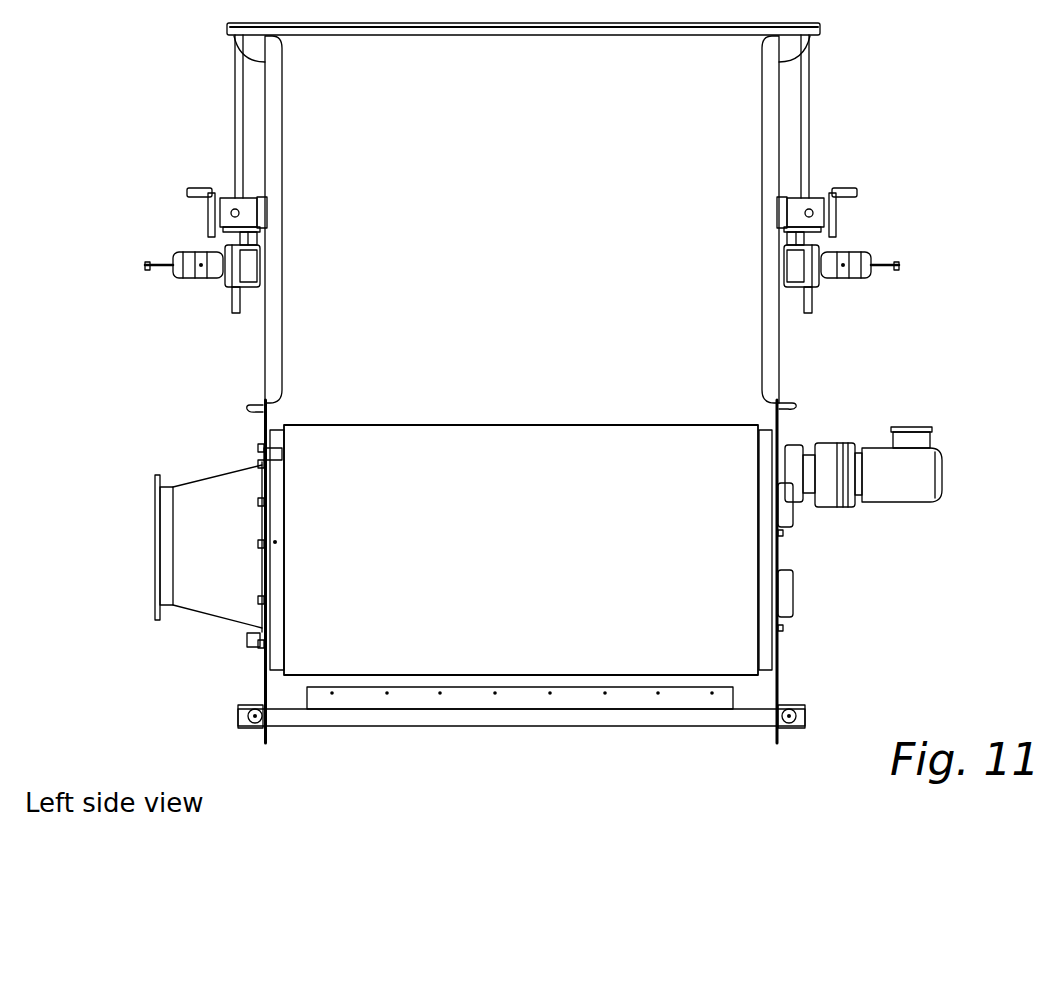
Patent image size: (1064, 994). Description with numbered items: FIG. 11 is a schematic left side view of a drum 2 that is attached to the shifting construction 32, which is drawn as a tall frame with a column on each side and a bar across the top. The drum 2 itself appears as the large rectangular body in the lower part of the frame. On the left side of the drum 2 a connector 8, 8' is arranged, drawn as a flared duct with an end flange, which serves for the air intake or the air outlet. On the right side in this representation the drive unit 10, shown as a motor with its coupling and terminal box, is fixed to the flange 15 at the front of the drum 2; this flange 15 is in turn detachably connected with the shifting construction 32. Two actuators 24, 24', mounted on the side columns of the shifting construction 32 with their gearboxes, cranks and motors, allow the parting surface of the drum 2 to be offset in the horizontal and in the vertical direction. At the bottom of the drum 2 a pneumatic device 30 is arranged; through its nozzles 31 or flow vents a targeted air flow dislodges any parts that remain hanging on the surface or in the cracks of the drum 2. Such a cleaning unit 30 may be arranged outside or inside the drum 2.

The drum 2 is at (537, 577).
The connector 8 is at (208, 520).
The connector 8' is at (208, 554).
The drive unit 10 is at (822, 460).
The flange 15 is at (782, 547).
The actuator 24 is at (838, 224).
The actuator 24' is at (197, 209).
The pneumatic device 30 is at (515, 700).
The nozzles 31 is at (600, 693).
The shifting construction 32 is at (273, 177).